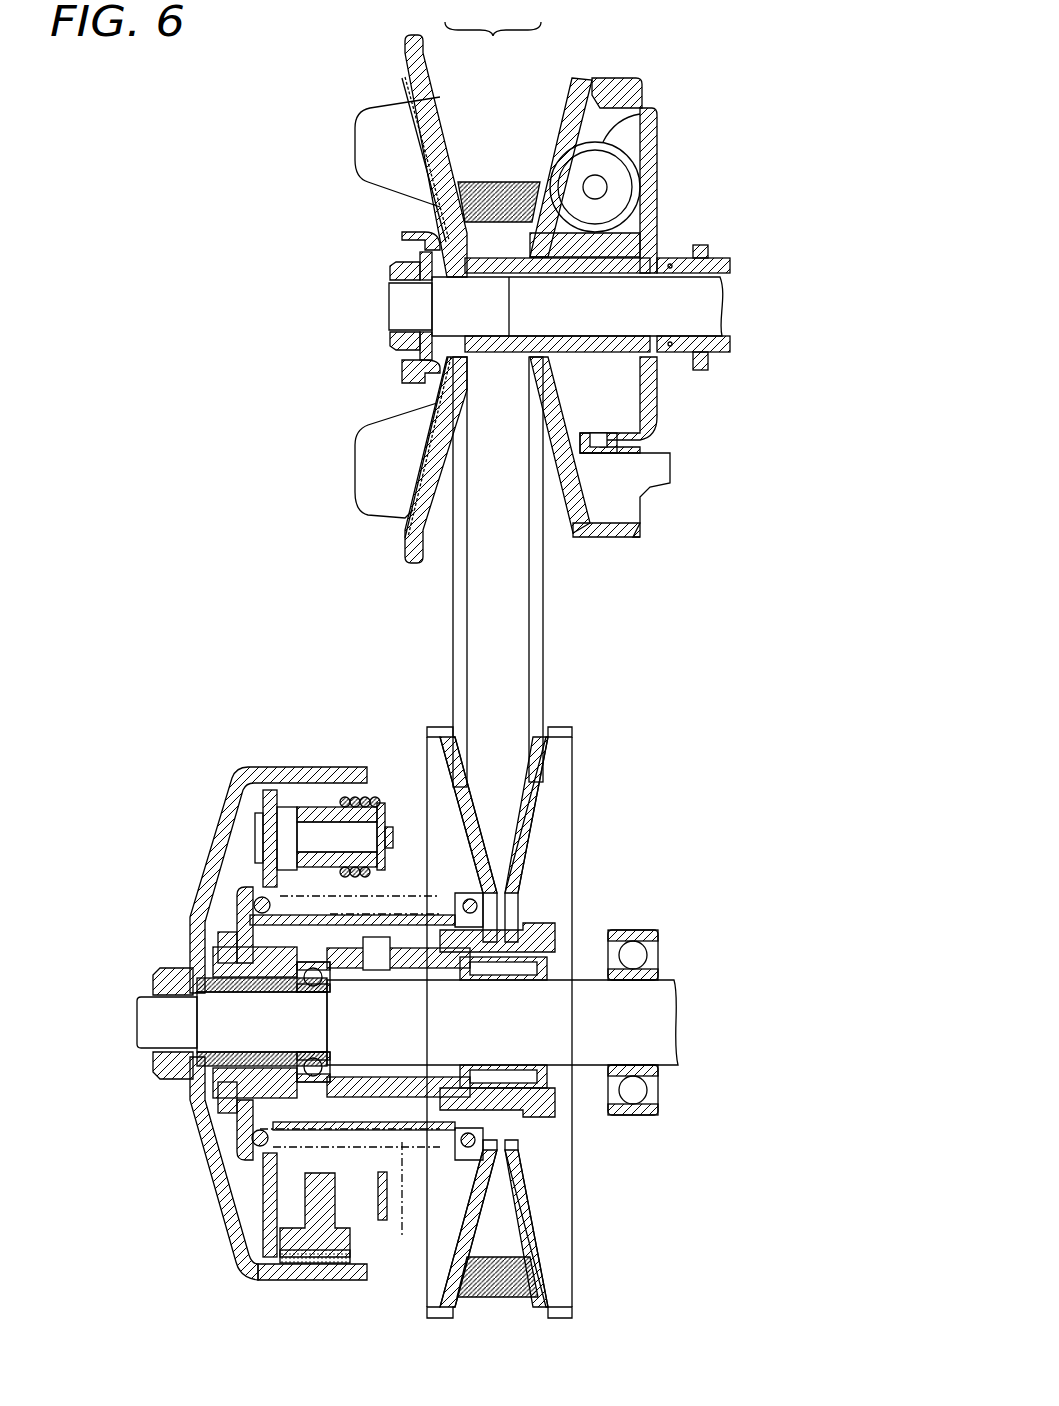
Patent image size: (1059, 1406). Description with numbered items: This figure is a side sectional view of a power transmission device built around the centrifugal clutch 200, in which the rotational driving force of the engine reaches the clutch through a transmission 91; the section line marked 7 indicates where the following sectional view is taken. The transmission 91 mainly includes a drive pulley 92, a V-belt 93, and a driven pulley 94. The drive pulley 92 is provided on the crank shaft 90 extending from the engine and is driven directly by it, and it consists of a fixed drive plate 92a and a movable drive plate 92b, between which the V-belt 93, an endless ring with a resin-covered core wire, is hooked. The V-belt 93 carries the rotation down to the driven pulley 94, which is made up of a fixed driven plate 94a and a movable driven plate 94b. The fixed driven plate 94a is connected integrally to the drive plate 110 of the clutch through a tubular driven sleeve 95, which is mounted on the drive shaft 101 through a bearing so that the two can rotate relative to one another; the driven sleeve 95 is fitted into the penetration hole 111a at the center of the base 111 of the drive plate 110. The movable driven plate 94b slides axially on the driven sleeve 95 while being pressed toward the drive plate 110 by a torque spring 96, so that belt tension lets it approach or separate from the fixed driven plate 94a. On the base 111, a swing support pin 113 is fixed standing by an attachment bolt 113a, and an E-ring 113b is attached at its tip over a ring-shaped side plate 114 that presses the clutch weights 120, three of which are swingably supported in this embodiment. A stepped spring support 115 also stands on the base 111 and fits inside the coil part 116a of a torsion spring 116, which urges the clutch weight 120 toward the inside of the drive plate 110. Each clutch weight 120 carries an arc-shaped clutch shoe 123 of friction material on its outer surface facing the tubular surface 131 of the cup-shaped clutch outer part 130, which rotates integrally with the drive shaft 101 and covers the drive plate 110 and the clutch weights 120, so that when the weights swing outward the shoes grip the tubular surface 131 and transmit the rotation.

The section line VII-VII 7 is at (378, 745).
The crank shaft 90 is at (722, 305).
The transmission 91 is at (343, 50).
The drive pulley 92 is at (493, 18).
The fixed drive plate 92a is at (437, 101).
The movable drive plate 92b is at (560, 110).
The V-belt 93 is at (545, 596).
The driven pulley 94 is at (690, 662).
The fixed driven plate 94a is at (560, 727).
The movable driven plate 94b is at (440, 727).
The driven sleeve 95 is at (555, 935).
The torque spring 96 is at (403, 1205).
The drive shaft 101 is at (678, 1022).
The drive plate 110 is at (237, 903).
The base 111 is at (218, 940).
The penetration hole 111a is at (212, 965).
The swing support pin 113 is at (258, 882).
The attachment bolt 113a is at (255, 835).
The E-ring 113b is at (386, 820).
The side plate 114 is at (383, 797).
The spring support 115 is at (318, 810).
The torsion spring 116 is at (345, 797).
The coil part 116a is at (352, 877).
The clutch weight 120 is at (288, 1226).
The clutch shoe 123 is at (300, 1264).
The clutch outer part 130 is at (228, 800).
The tubular surface 131 is at (265, 1266).
The centrifugal clutch 200 is at (170, 775).